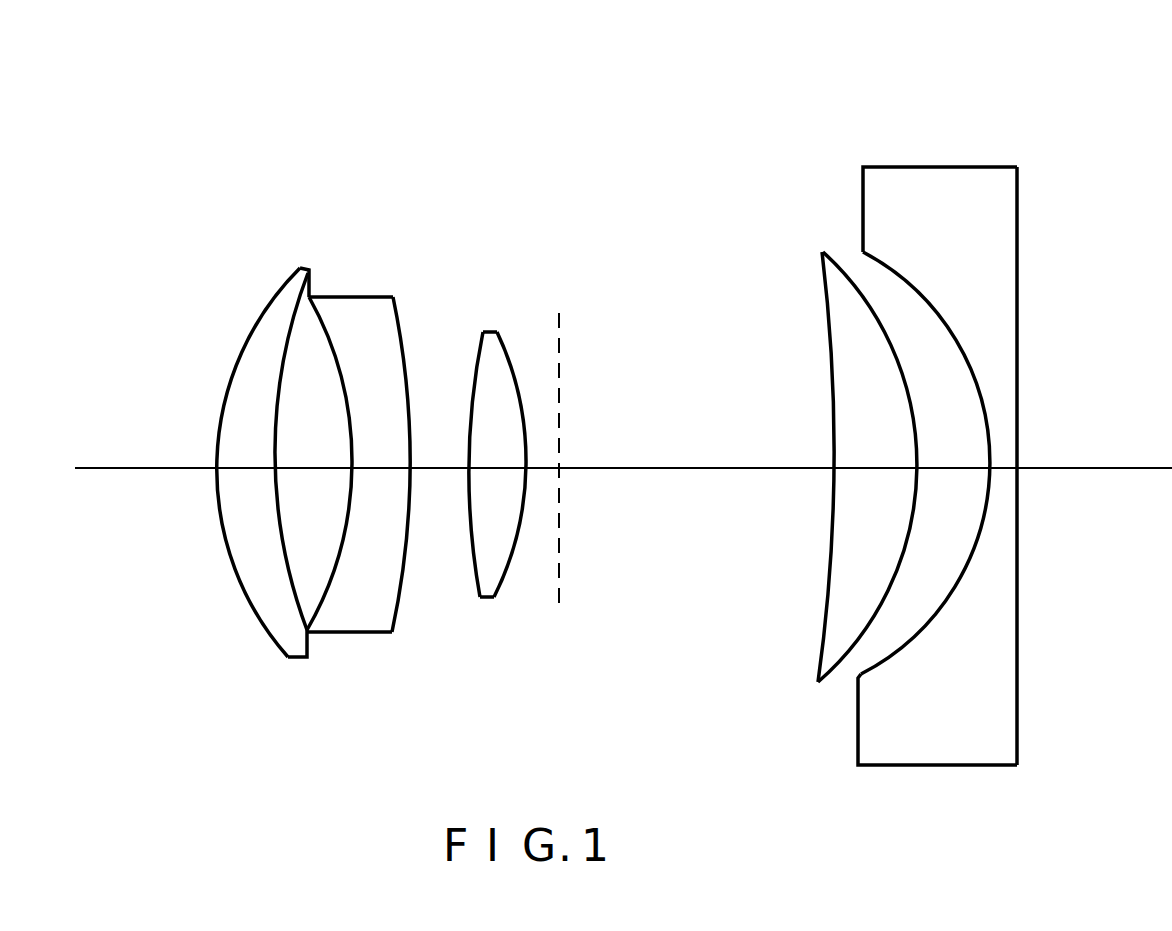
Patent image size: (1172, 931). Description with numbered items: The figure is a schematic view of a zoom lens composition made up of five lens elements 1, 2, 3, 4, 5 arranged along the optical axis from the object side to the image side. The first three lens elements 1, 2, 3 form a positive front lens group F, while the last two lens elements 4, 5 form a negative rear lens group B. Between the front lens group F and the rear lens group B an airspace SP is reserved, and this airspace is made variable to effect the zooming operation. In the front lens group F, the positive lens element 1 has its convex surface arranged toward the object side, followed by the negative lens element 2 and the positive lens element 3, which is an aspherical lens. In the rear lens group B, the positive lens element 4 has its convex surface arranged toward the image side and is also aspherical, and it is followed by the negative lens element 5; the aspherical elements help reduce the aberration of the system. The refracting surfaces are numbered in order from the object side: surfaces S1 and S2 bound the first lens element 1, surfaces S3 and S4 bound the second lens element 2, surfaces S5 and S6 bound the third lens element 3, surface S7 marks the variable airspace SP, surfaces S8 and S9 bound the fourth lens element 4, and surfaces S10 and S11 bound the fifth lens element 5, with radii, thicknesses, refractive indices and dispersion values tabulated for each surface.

The front lens group F is at (605, 90).
The rear lens group B is at (1128, 92).
The airspace SP is at (616, 365).
The positive lens element 1 is at (260, 451).
The negative lens element 2 is at (372, 465).
The positive lens element 3 is at (491, 466).
The positive lens element 4 is at (817, 442).
The negative lens element 5 is at (953, 498).
The first surface S1 is at (253, 318).
The second surface S2 is at (293, 356).
The third surface S3 is at (348, 418).
The fourth surface S4 is at (403, 340).
The fifth surface S5 is at (475, 378).
The sixth surface S6 is at (513, 365).
The seventh surface S7 is at (560, 470).
The eighth surface S8 is at (825, 325).
The ninth surface S9 is at (838, 257).
The tenth surface S10 is at (858, 262).
The eleventh surface S11 is at (1020, 236).